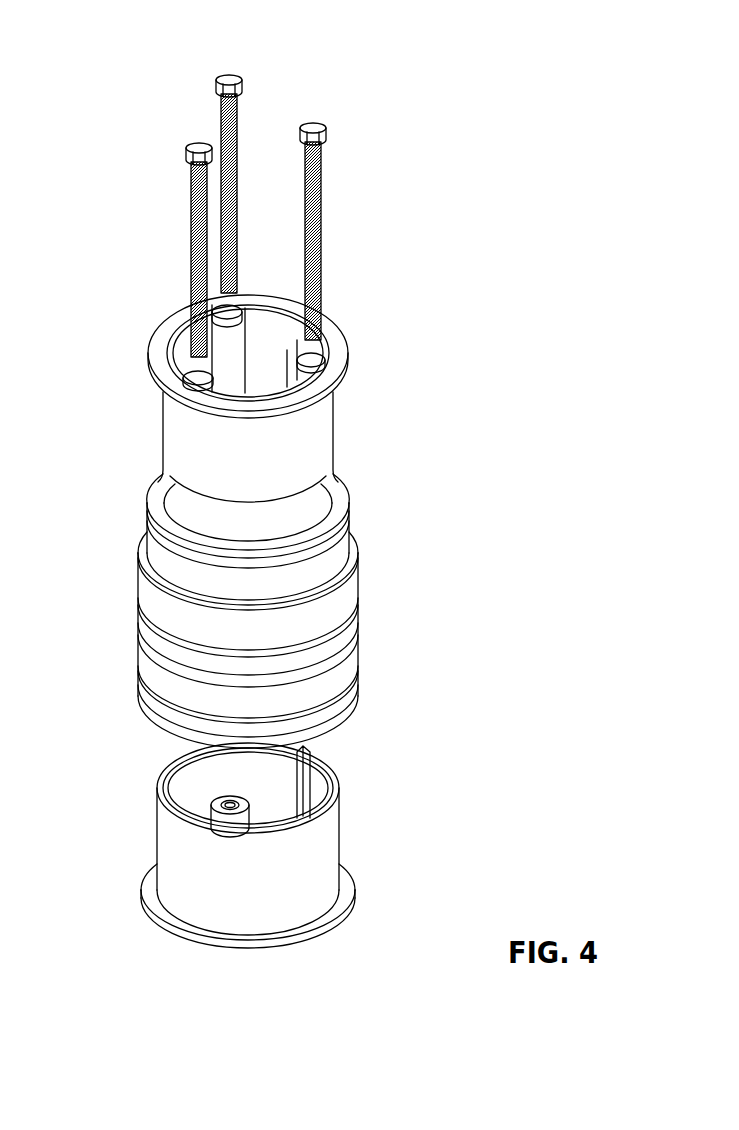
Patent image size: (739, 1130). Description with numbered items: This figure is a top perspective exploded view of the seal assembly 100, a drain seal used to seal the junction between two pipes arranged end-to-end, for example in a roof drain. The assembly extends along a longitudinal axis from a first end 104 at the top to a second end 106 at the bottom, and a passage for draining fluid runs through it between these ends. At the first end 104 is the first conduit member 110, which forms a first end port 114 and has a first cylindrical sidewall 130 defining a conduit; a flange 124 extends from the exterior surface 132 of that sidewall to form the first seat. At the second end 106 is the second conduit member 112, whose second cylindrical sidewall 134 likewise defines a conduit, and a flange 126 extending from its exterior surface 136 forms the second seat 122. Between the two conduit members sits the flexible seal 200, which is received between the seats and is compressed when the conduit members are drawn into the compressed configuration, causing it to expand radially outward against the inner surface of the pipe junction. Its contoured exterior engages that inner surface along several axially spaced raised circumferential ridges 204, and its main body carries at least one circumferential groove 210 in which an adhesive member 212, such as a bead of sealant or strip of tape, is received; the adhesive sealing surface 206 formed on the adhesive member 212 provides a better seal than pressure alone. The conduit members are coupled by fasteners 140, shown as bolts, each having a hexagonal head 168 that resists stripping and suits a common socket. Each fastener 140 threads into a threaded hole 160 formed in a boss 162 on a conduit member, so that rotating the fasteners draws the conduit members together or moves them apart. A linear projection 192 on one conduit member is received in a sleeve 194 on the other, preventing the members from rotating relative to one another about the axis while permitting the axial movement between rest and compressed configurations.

The seal assembly 100 is at (517, 76).
The first end 104 is at (153, 210).
The second end 106 is at (328, 1067).
The first conduit member 110 is at (428, 405).
The second conduit member 112 is at (450, 807).
The first end port 114 is at (153, 360).
The second seat 122 is at (150, 873).
The flange 124 is at (352, 357).
The flange 126 is at (141, 890).
The first cylindrical sidewall 130 is at (315, 438).
The exterior surface 132 is at (266, 458).
The second cylindrical sidewall 134 is at (333, 838).
The exterior surface 136 is at (265, 893).
The fastener 140 is at (233, 183).
The threaded hole 160 is at (229, 805).
The boss 162 is at (226, 338).
The hexagonal head 168 is at (313, 125).
The linear projection 192 is at (308, 800).
The sleeve 194 is at (293, 350).
The flexible seal 200 is at (527, 598).
The raised circumferential ridges 204 is at (365, 572).
The adhesive sealing surface 206 is at (300, 607).
The circumferential groove 210 is at (210, 717).
The adhesive member 212 is at (145, 567).